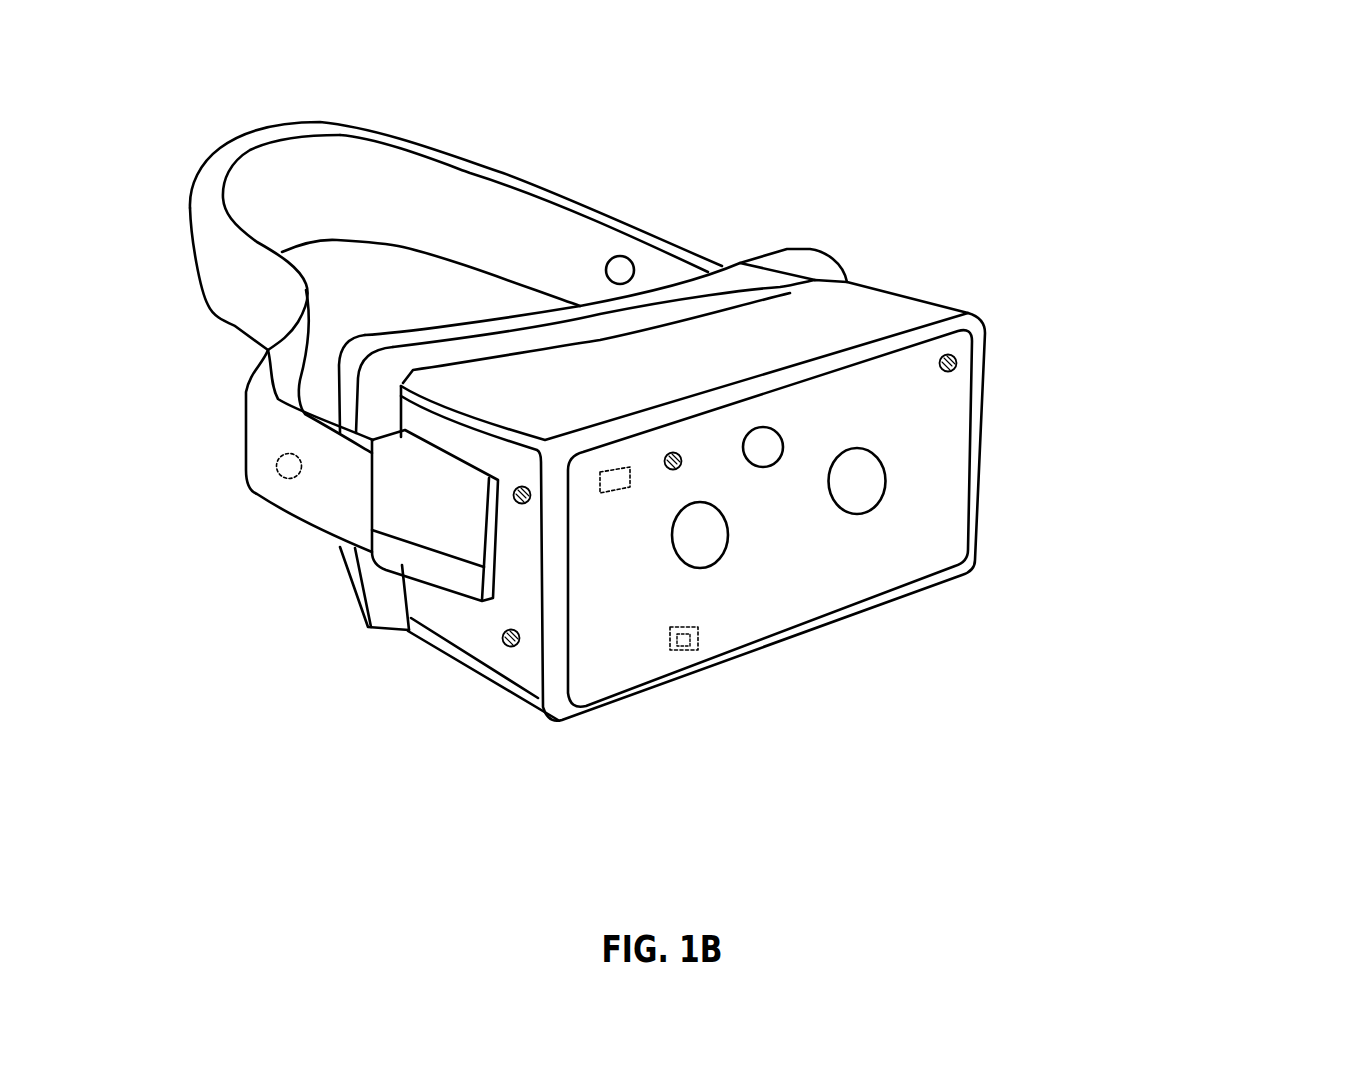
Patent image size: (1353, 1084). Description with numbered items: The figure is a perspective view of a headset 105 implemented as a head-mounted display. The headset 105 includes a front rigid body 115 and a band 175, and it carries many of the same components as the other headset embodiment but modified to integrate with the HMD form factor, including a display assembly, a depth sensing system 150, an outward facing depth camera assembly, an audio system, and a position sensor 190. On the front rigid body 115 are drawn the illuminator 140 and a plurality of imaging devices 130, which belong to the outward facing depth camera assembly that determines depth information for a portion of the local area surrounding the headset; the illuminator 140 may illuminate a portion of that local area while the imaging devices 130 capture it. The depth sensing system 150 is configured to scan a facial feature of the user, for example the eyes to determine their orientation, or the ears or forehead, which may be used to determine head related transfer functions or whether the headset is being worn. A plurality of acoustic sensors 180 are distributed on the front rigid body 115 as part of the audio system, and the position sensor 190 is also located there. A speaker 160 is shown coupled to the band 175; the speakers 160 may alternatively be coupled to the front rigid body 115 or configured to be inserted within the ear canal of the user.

The headset 105 is at (235, 92).
The band 175 is at (595, 205).
The front rigid body 115 is at (982, 318).
The illuminator 140 is at (781, 431).
The imaging device 130 is at (720, 555).
The depth sensing system 150 is at (600, 493).
The position sensor 190 is at (698, 636).
The acoustic sensor 180 is at (503, 639).
The speaker 160 is at (280, 478).